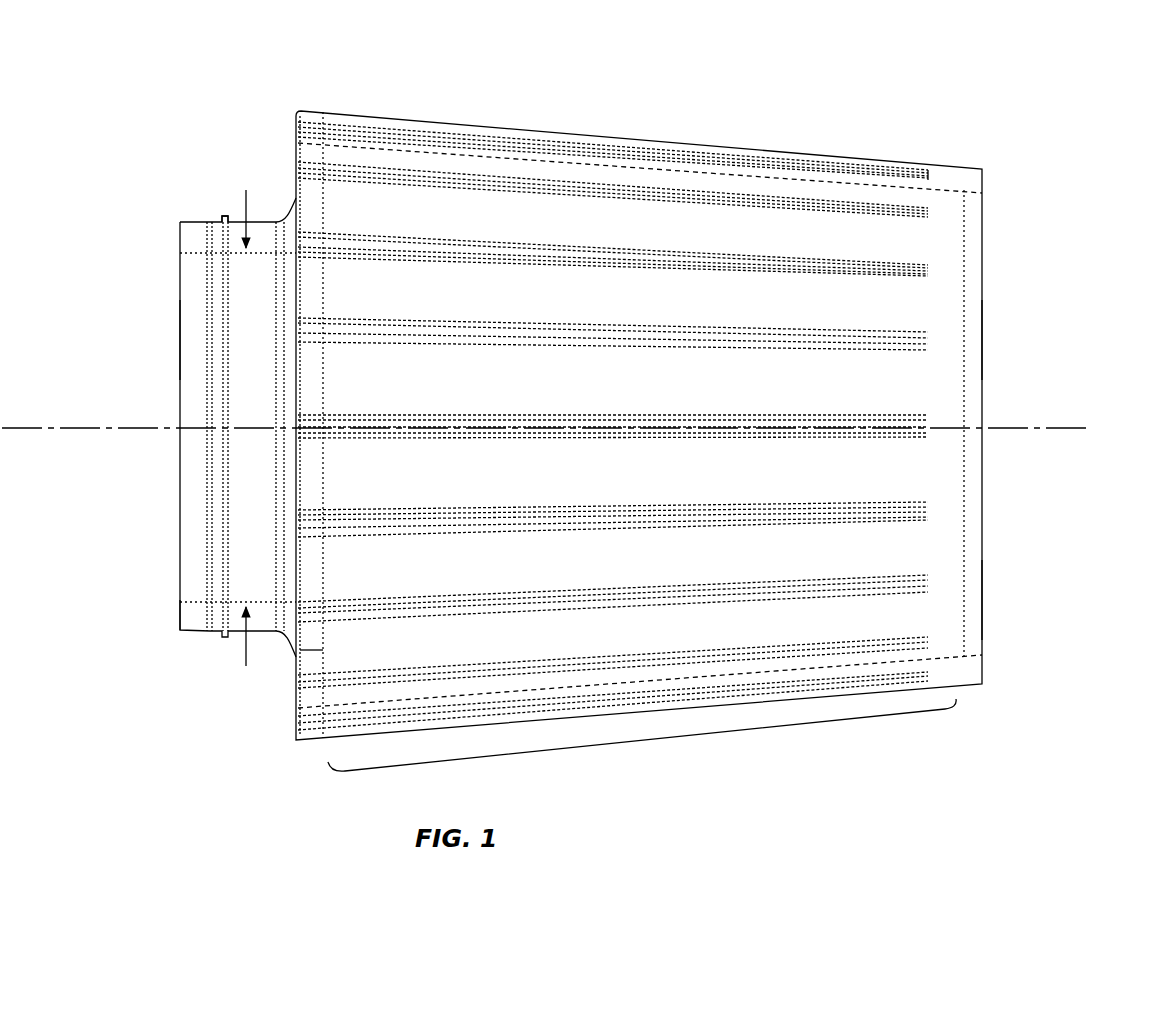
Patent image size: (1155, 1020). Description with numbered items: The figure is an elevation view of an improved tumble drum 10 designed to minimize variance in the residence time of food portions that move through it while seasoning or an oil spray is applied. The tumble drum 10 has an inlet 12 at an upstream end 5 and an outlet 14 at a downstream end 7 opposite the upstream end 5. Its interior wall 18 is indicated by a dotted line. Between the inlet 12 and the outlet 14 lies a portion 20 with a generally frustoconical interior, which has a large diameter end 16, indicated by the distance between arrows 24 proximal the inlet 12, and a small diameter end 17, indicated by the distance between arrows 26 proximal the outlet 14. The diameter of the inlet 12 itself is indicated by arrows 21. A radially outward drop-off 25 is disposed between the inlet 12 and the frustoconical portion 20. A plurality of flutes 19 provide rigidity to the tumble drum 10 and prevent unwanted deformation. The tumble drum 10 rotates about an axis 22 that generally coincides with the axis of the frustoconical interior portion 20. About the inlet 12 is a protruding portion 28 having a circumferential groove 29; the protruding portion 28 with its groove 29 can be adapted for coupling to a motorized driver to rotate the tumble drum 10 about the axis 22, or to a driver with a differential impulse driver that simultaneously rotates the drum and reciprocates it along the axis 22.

The upstream end 5 is at (178, 632).
The downstream end 7 is at (983, 596).
The tumble drum 10 is at (815, 152).
The inlet 12 is at (158, 343).
The outlet 14 is at (1005, 345).
The large diameter end 16 is at (491, 146).
The small diameter end 17 is at (940, 182).
The interior wall 18 is at (597, 168).
The flutes 19 is at (770, 522).
The portion with generally frustoconical interior 20 is at (642, 749).
The arrows indicating inlet diameter 21 is at (248, 427).
The axis 22 is at (78, 432).
The arrows indicating large diameter end 24 is at (323, 141).
The radially outward drop-off 25 is at (323, 652).
The arrows indicating small diameter end 26 is at (964, 195).
The protruding portion 28 is at (178, 568).
The circumferential groove 29 is at (222, 217).